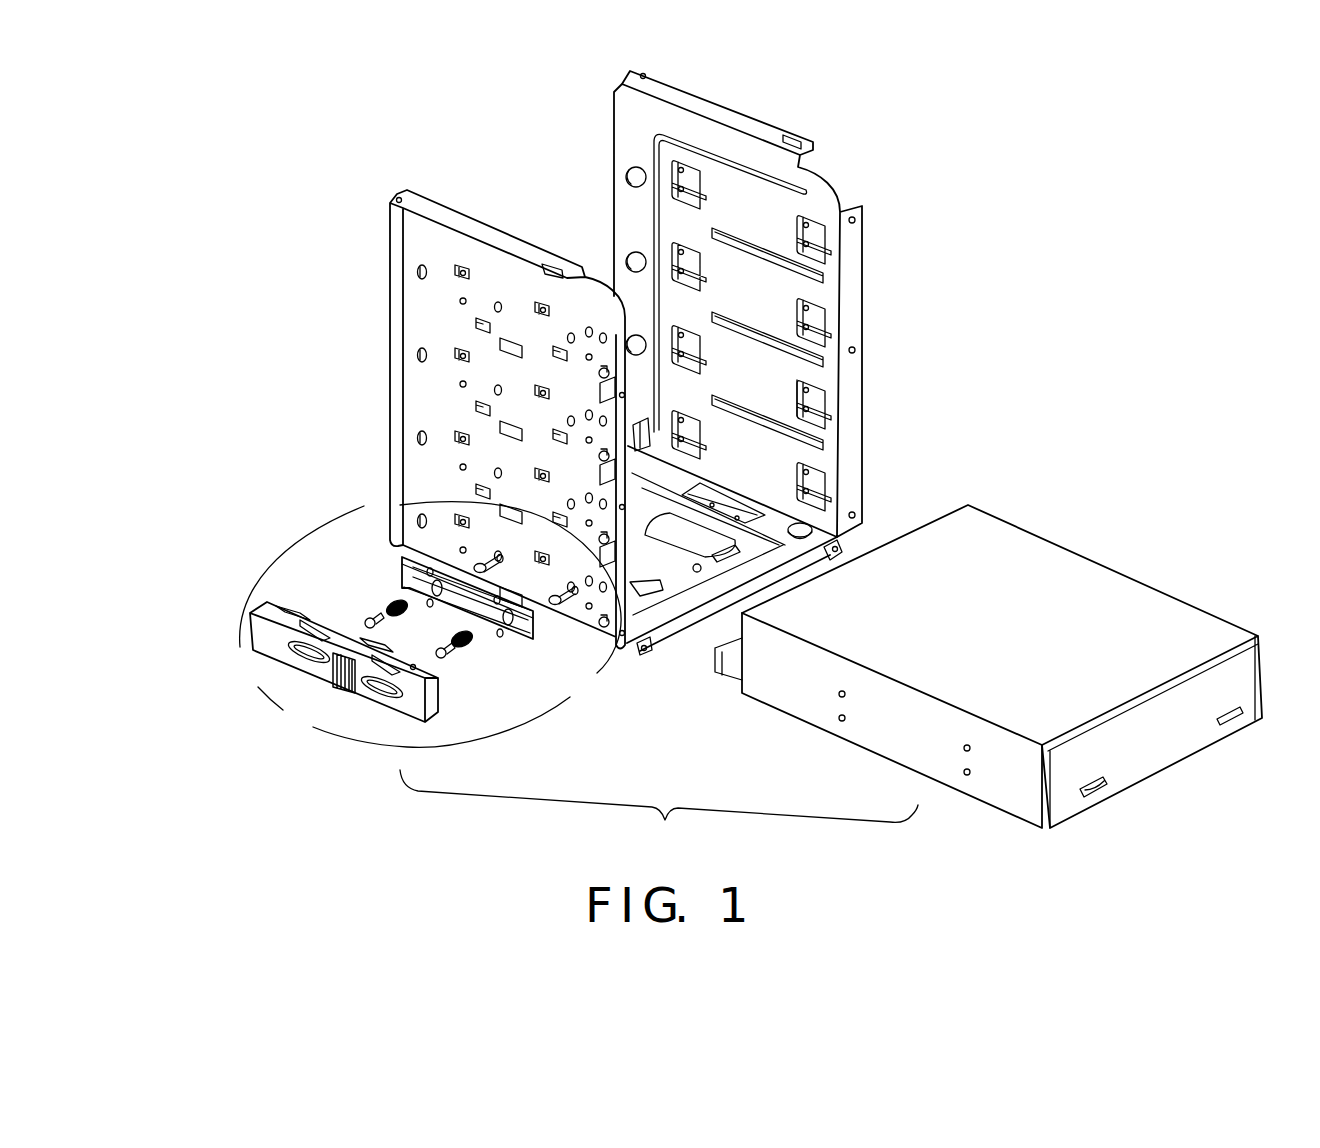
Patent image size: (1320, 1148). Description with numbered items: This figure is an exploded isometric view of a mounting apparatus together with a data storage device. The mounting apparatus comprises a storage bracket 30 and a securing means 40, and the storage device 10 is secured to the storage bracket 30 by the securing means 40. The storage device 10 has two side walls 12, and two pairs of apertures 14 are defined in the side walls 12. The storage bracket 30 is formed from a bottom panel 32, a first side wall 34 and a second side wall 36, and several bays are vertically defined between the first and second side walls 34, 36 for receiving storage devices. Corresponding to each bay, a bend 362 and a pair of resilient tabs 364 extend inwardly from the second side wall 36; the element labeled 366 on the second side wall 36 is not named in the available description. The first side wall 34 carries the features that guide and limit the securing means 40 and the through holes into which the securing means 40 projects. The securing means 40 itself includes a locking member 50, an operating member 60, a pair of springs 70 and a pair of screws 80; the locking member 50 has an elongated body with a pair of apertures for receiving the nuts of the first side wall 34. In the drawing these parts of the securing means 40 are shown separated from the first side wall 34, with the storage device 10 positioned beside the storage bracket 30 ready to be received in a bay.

The storage device 10 is at (1101, 556).
The side wall 12 is at (998, 792).
The aperture 14 is at (838, 718).
The storage bracket 30 is at (865, 273).
The bottom panel 32 is at (650, 627).
The first side wall 34 is at (418, 258).
The second side wall 36 is at (630, 122).
The bend 362 is at (814, 432).
The resilient tab 364 is at (816, 505).
The slot 366 is at (808, 467).
The securing means 40 is at (540, 638).
The locking member 50 is at (393, 550).
The operating member 60 is at (270, 607).
The spring 70 is at (383, 605).
The screw 80 is at (362, 619).